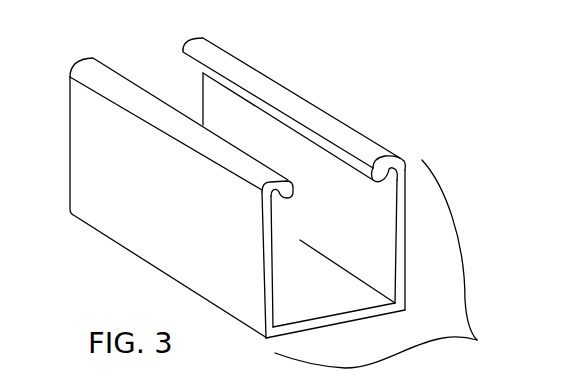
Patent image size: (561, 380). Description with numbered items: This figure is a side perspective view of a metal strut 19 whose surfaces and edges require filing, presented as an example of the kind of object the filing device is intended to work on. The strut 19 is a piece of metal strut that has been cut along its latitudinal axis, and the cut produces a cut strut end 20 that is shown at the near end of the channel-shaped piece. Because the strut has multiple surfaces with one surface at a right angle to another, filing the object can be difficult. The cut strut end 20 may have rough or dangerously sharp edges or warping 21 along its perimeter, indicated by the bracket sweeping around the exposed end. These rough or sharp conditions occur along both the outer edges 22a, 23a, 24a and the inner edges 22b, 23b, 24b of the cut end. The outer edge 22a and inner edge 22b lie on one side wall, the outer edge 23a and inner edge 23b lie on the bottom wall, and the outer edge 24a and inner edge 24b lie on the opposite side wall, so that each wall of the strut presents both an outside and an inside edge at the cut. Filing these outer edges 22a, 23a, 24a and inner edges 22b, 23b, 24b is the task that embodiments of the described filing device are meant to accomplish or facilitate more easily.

The metal strut 19 is at (312, 73).
The cut strut end 20 is at (418, 150).
The warping 21 is at (393, 264).
The outer edge 22a is at (403, 230).
The inner edge 22b is at (395, 242).
The outer edge 23a is at (370, 314).
The inner edge 23b is at (327, 318).
The outer edge 24a is at (262, 247).
The inner edge 24b is at (270, 224).